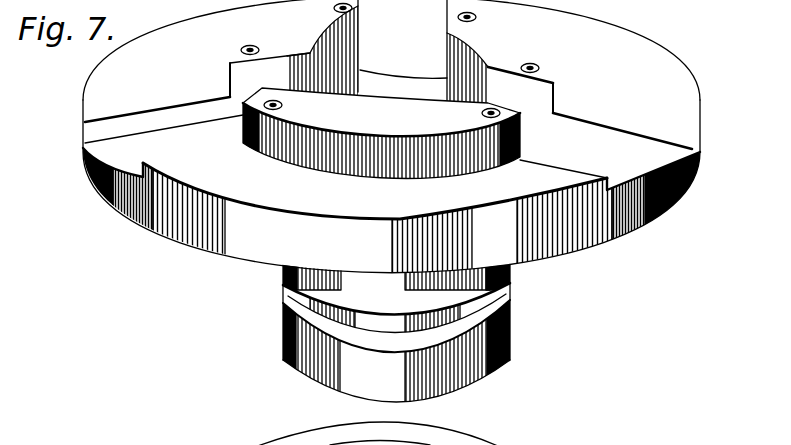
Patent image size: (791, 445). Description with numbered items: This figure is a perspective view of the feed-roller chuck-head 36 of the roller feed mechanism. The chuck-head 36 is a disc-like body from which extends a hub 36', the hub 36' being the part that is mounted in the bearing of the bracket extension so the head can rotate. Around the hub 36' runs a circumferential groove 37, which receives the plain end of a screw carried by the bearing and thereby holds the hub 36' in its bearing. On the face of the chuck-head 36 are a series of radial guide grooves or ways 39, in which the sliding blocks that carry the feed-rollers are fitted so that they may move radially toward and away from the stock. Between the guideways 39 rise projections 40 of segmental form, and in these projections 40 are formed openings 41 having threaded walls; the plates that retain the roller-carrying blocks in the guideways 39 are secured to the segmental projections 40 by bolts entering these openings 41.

The feed-roller chuck-head 36 is at (392, 145).
The hub 36' is at (422, 320).
The circumferential groove 37 is at (480, 314).
The radial guide grooves or ways 39 is at (346, 100).
The projections of segmental form 40 is at (461, 97).
The openings 41 is at (256, 47).